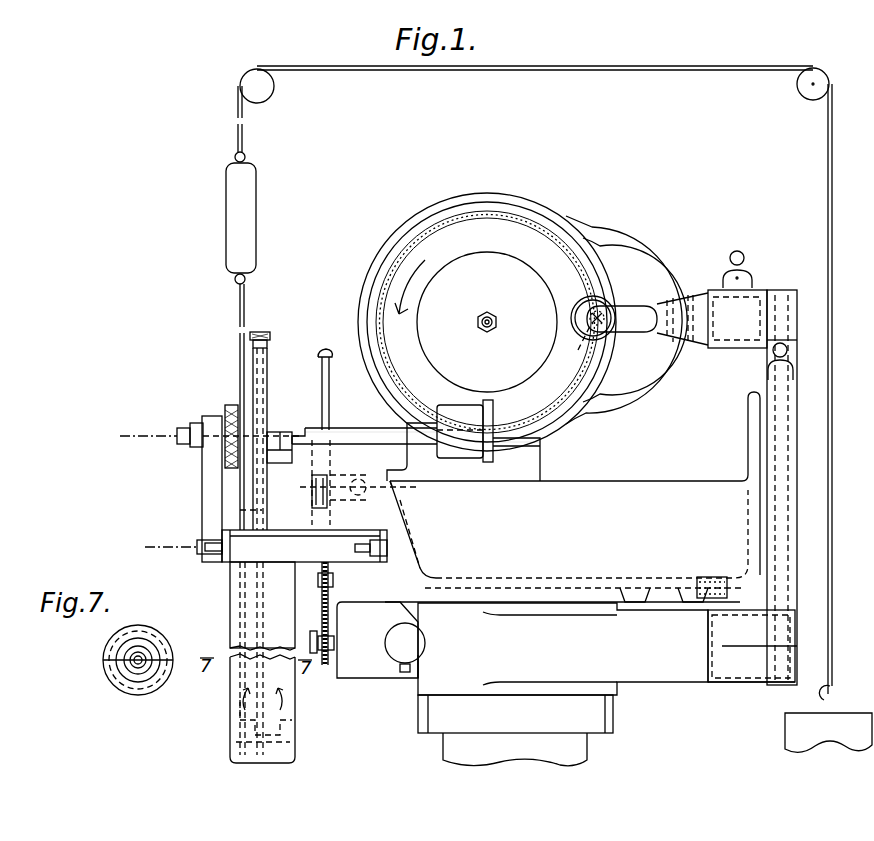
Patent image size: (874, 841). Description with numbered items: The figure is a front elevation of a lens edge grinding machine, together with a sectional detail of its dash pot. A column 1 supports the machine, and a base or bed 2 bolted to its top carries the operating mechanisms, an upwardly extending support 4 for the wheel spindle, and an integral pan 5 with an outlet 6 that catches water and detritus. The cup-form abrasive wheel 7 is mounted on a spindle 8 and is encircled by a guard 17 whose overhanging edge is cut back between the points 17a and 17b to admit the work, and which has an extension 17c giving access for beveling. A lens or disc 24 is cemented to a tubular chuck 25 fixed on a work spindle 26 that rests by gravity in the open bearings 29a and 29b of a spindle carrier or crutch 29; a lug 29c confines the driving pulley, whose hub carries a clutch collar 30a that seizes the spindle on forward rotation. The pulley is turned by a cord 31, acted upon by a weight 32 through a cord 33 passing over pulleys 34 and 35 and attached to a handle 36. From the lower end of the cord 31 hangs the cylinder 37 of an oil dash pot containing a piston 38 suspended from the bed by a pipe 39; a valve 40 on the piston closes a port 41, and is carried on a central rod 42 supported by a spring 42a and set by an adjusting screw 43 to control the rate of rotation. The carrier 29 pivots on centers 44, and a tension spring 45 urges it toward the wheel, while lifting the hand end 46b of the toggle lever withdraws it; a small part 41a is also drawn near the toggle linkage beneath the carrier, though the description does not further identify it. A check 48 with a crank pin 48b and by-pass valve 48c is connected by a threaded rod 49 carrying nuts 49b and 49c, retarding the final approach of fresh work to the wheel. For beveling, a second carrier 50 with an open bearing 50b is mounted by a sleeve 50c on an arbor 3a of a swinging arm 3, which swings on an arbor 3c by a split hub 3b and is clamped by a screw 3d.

In FIG. 1, the column 1 is at (563, 684).
In FIG. 1, the base or bed 2 is at (304, 546).
In FIG. 1, the swinging arm or support 3 is at (789, 487).
In FIG. 1, the arbor 3a is at (750, 369).
In FIG. 1, the split hub 3b is at (765, 646).
In FIG. 1, the arbor 3c is at (751, 701).
In FIG. 1, the screw 3d is at (807, 540).
In FIG. 1, the upwardly extending support 4 is at (528, 459).
In FIG. 1, the pan 5 is at (572, 497).
In FIG. 1, the outlet 6 is at (712, 560).
In FIG. 1, the abrasive wheel 7 is at (487, 322).
In FIG. 1, the spindle 8 is at (499, 310).
In FIG. 1, the guard 17 is at (487, 310).
In FIG. 1, the cut-back point of guard 17a is at (371, 419).
In FIG. 1, the cut-back point of guard 17b is at (544, 447).
In FIG. 1, the guard extension 17c is at (630, 320).
In FIG. 1, the lens or disc 24 is at (563, 379).
In FIG. 1, the tubular chuck 25 is at (515, 364).
In FIG. 1, the work spindle 26 is at (441, 385).
In FIG. 1, the spindle carrier or crutch 29 is at (420, 496).
In FIG. 1, the open bearing 29a is at (288, 453).
In FIG. 1, the open bearing 29b is at (412, 452).
In FIG. 1, the lug 29c is at (210, 489).
In FIG. 1, the collar 30a is at (207, 412).
In FIG. 1, the cord 31 is at (202, 519).
In FIG. 1, the weight 32 is at (828, 718).
In FIG. 1, the cord 33 is at (534, 376).
In FIG. 1, the pulley 34 is at (797, 97).
In FIG. 1, the pulley 35 is at (274, 94).
In FIG. 1, the handle 36 is at (266, 218).
In FIG. 1, the dash pot cylinder 37 is at (275, 662).
In FIG. 7, the dash pot cylinder 37 is at (151, 658).
In FIG. 1, the piston 38 is at (244, 717).
In FIG. 7, the piston 38 is at (121, 655).
In FIG. 1, the pipe 39 is at (287, 485).
In FIG. 7, the pipe 39 is at (122, 678).
In FIG. 1, the valve 40 is at (287, 745).
In FIG. 1, the port 41 is at (283, 709).
In FIG. 1, the slide 41a is at (305, 482).
In FIG. 1, the central rod 42 is at (244, 557).
In FIG. 7, the central rod 42 is at (144, 686).
In FIG. 1, the spring 42a is at (211, 517).
In FIG. 1, the adjusting screw 43 is at (277, 326).
In FIG. 1, the centers 44 is at (272, 567).
In FIG. 1, the tension spring 45 is at (360, 474).
In FIG. 1, the hand end 46b is at (341, 373).
In FIG. 1, the check 48 is at (381, 640).
In FIG. 1, the crank pin 48b is at (328, 662).
In FIG. 1, the by-pass valve 48c is at (402, 693).
In FIG. 1, the threaded connecting rod 49 is at (312, 613).
In FIG. 1, the nut 49b is at (352, 584).
In FIG. 1, the nut 49c is at (379, 682).
In FIG. 1, the second spindle carrier or crutch 50 is at (685, 298).
In FIG. 1, the open bearing 50b is at (622, 319).
In FIG. 1, the sleeve or hub 50c is at (765, 299).